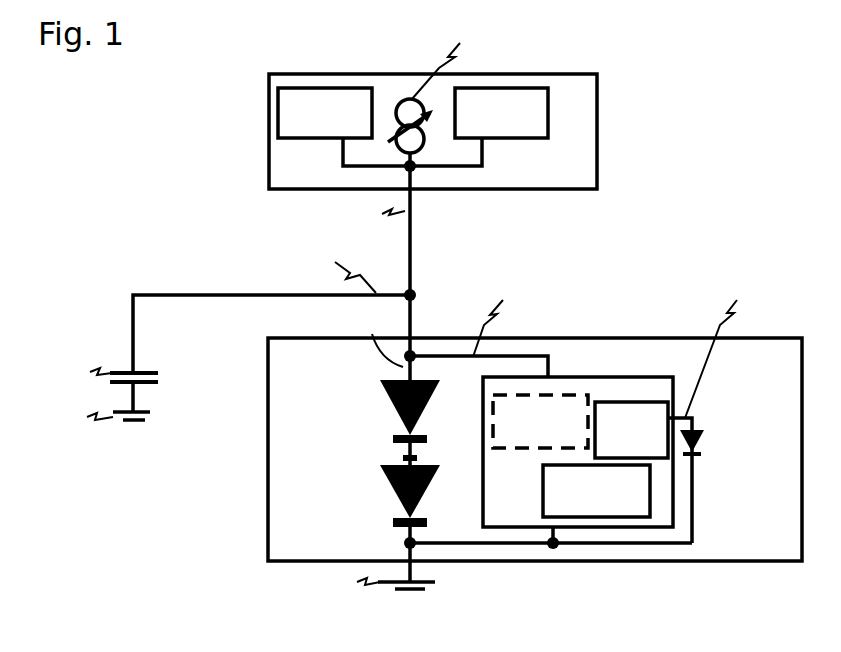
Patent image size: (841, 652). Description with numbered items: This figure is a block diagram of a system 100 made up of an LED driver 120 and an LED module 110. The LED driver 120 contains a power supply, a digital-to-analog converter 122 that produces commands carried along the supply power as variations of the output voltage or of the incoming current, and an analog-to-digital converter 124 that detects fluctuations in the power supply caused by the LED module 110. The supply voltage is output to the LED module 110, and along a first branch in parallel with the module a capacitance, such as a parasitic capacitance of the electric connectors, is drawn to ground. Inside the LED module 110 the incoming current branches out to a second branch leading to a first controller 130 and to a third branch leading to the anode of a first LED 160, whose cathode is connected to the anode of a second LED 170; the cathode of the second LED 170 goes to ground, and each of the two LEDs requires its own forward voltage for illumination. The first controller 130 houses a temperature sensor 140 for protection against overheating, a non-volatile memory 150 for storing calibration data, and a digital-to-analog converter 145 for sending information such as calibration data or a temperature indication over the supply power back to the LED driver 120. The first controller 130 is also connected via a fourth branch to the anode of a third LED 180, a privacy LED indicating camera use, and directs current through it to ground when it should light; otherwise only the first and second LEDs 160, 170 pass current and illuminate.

The system 100 is at (257, 48).
The LED module 110 is at (652, 308).
The LED driver 120 is at (627, 40).
The digital-to-analog converter 122 is at (335, 74).
The analog-to-digital converter 124 is at (515, 74).
The first controller 130 is at (606, 454).
The temperature sensor 140 is at (662, 365).
The digital-to-analog converter 145 is at (551, 360).
The non-volatile memory 150 is at (630, 550).
The first LED 160 is at (369, 411).
The second LED 170 is at (369, 496).
The third LED 180 is at (726, 430).